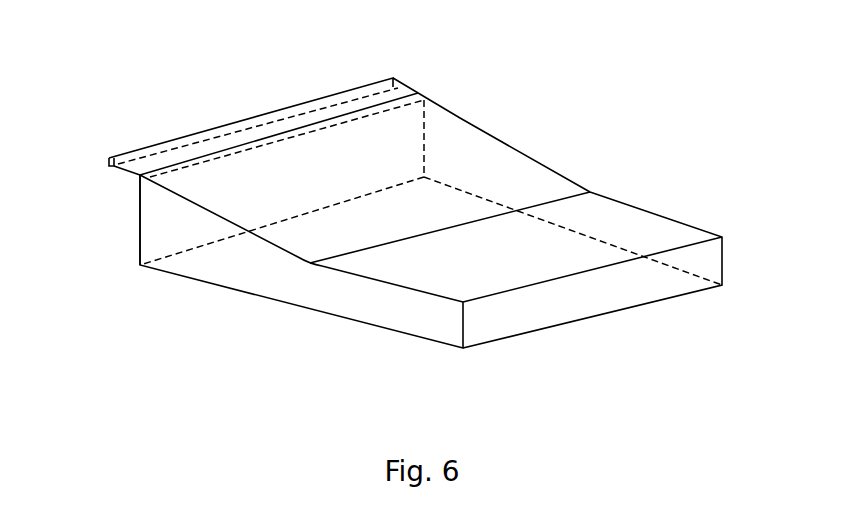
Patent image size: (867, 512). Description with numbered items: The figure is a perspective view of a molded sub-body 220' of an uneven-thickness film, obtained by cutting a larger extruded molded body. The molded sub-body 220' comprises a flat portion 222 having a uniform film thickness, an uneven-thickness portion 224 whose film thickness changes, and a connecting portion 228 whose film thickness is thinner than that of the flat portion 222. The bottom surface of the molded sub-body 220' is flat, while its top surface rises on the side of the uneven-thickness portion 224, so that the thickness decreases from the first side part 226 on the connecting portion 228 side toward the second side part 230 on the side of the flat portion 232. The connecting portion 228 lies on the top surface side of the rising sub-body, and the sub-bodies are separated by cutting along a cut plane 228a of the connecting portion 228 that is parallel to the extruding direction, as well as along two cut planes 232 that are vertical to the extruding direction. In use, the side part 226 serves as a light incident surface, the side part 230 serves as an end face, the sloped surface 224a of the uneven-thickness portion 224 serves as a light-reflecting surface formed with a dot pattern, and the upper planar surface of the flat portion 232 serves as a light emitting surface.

The molded sub-body 220' is at (431, 183).
The connecting portion 228 is at (110, 163).
The cut plane 228a is at (237, 123).
The first side part 226 is at (152, 197).
The sloped surface 224a is at (500, 154).
The uneven-thickness portion 224 is at (287, 320).
The flat portion 222 is at (570, 247).
The cut plane 232 is at (658, 233).
The second side part 230 is at (513, 317).